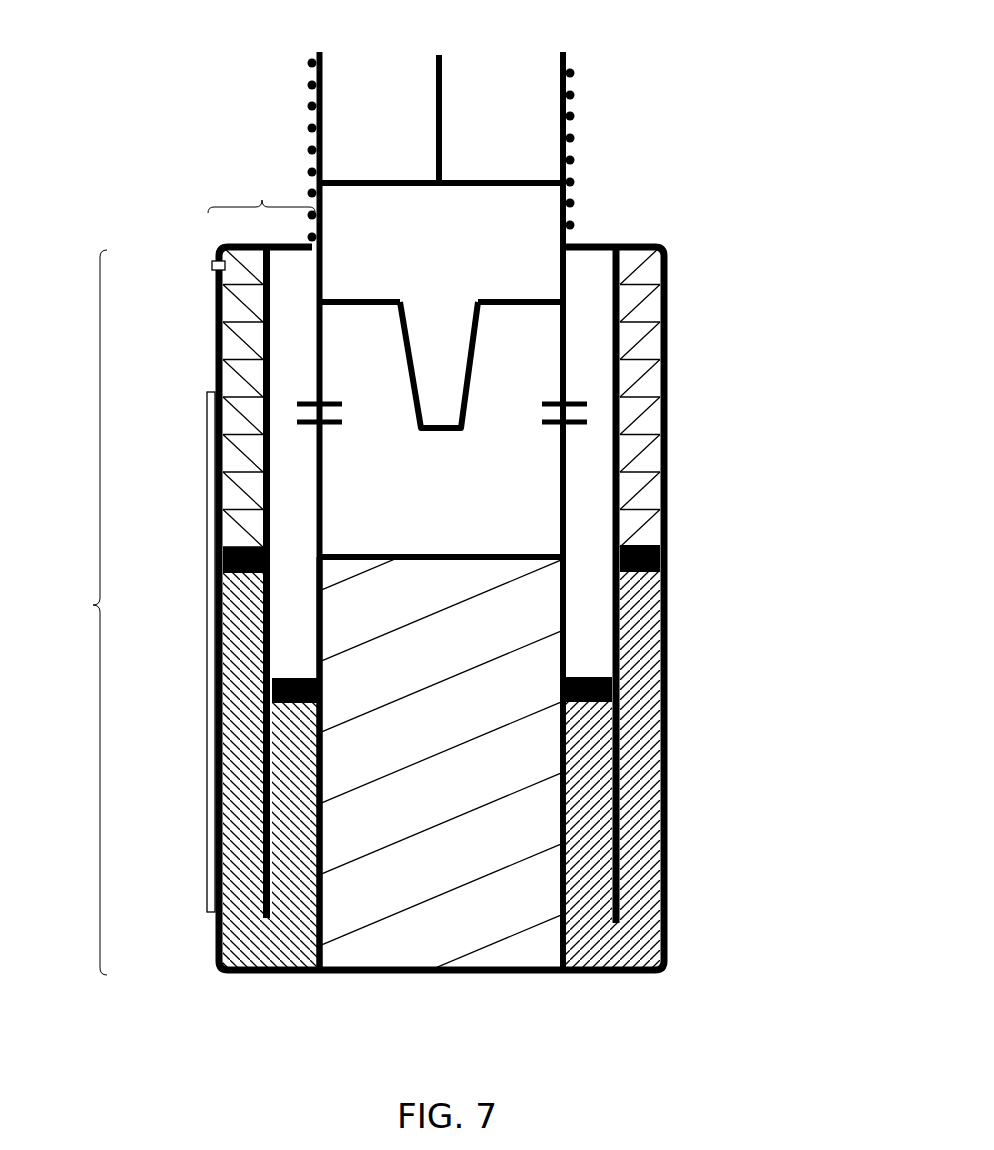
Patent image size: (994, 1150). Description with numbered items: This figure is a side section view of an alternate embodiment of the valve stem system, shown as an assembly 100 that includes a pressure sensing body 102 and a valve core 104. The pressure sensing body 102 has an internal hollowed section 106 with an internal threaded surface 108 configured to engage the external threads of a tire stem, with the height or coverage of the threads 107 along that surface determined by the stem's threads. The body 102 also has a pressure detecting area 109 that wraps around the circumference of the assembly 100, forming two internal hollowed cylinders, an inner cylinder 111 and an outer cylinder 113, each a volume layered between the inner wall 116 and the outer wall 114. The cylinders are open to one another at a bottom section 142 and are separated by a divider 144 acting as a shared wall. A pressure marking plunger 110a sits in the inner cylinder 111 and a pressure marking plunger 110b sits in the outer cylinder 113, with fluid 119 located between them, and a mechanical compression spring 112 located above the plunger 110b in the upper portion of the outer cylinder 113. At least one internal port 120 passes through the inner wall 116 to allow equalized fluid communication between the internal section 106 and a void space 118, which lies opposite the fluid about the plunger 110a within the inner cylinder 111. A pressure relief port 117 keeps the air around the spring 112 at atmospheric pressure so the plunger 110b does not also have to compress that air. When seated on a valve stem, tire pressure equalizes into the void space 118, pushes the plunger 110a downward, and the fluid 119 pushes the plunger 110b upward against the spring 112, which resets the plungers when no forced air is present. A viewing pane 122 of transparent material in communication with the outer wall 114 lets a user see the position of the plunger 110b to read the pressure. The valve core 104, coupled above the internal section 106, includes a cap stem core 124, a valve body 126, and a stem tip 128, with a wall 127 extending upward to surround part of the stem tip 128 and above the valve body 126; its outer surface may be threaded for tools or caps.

The assembly 100 is at (752, 82).
The pressure sensing body 102 is at (682, 258).
The valve core 104 is at (472, 530).
The internal hollowed section 106 is at (414, 950).
The threads 107 is at (437, 757).
The internal threaded surface 108 is at (323, 760).
The pressure detecting area 109 is at (181, 571).
The pressure marking plunger 110a is at (302, 673).
The pressure marking plunger 110b is at (648, 577).
The inner cylinder 111 is at (578, 514).
The mechanical compression spring 112 is at (240, 368).
The outer cylinder 113 is at (652, 338).
The outer wall 114 is at (215, 940).
The inner wall 116 is at (563, 952).
The pressure relief port 117 is at (212, 266).
The void space 118 is at (580, 328).
The fluid 119 is at (645, 620).
The internal port 120 is at (342, 417).
The viewing pane 122 is at (207, 527).
The cap stem core 124 is at (457, 372).
The valve body 126 is at (455, 256).
The wall 127 is at (322, 88).
The stem tip 128 is at (442, 90).
The bottom section 142 is at (614, 952).
The divider 144 is at (263, 833).